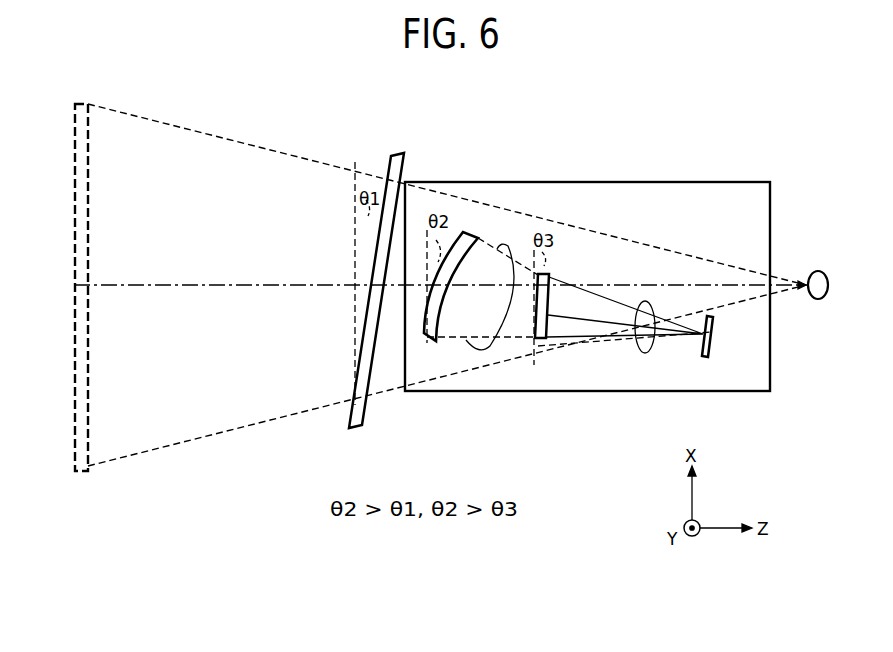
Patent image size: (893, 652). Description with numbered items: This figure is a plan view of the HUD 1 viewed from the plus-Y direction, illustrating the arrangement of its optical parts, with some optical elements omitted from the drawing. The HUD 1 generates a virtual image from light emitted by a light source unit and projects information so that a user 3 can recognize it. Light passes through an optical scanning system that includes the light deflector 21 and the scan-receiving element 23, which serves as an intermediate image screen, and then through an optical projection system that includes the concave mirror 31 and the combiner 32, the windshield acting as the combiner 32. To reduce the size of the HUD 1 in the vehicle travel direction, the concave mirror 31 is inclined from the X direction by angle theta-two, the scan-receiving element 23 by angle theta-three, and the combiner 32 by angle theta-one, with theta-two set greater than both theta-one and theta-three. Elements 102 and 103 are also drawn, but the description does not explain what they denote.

The HUD 1 is at (708, 156).
The user 3 is at (818, 300).
The light deflector 21 is at (713, 335).
The scan-receiving element 23 is at (549, 328).
The concave mirror 31 is at (479, 237).
The combiner 32 is at (399, 153).
The projection lens 102 is at (652, 346).
The virtual lens surface 103 is at (487, 350).